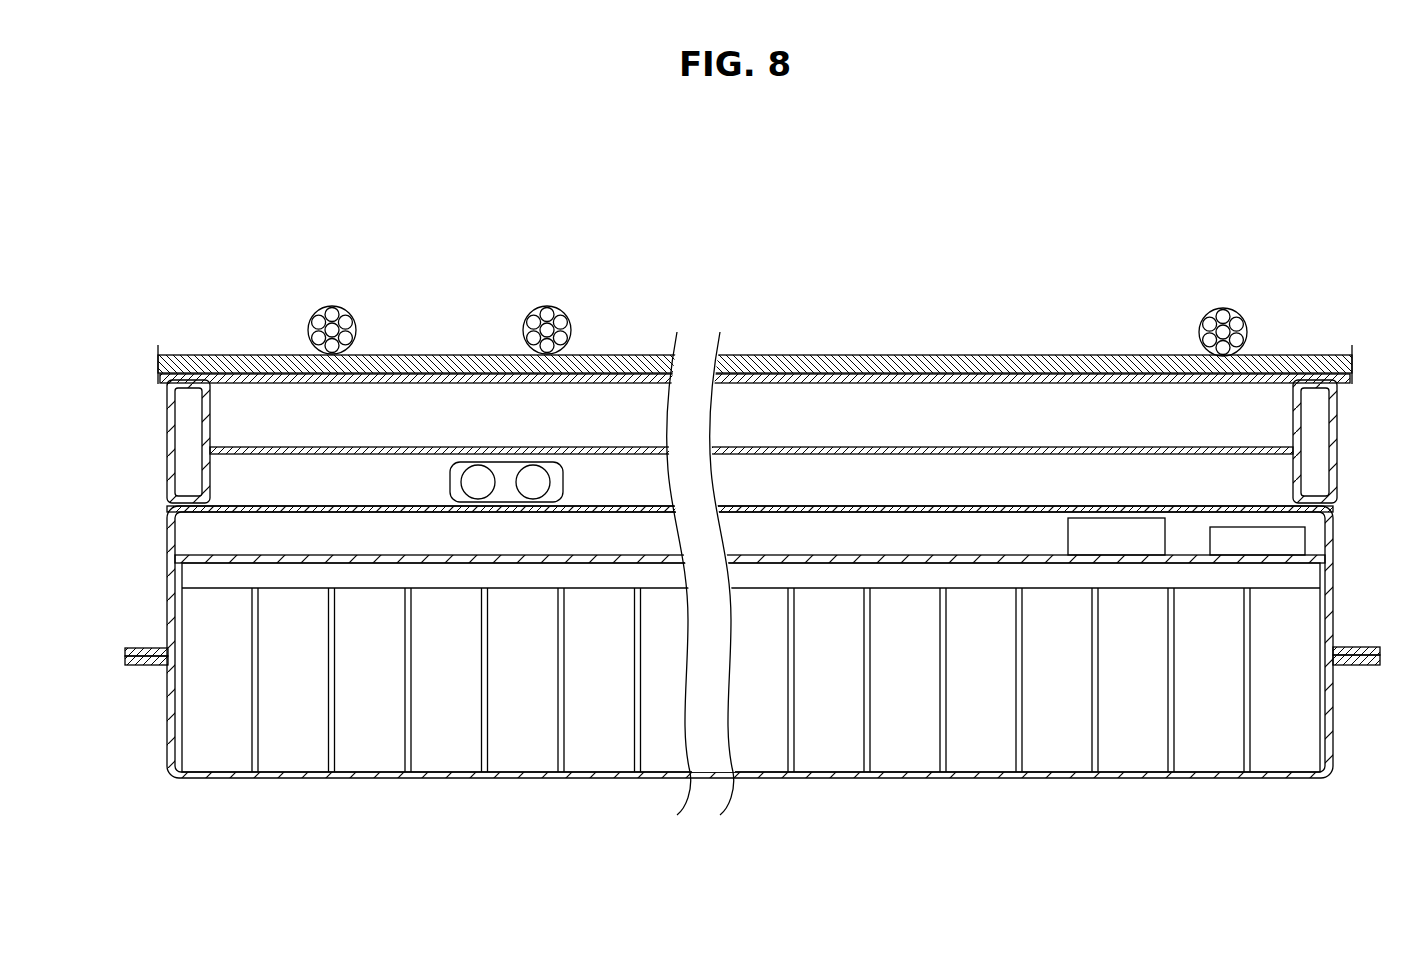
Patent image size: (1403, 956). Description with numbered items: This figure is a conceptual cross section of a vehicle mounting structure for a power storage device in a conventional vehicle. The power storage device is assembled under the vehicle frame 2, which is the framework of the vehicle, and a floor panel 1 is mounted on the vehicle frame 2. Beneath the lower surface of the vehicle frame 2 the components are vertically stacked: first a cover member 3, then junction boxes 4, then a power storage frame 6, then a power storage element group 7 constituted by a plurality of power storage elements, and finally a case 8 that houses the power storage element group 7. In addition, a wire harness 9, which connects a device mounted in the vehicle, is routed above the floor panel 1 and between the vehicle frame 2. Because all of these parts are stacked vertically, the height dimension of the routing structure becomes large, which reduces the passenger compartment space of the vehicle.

The floor panel 1 is at (885, 362).
The vehicle frame 2 is at (938, 453).
The cover member 3 is at (368, 505).
The junction boxes 4 is at (1247, 535).
The power storage frame 6 is at (750, 555).
The power storage element group 7 is at (597, 585).
The case 8 is at (172, 712).
The wire harness 9 is at (550, 310).